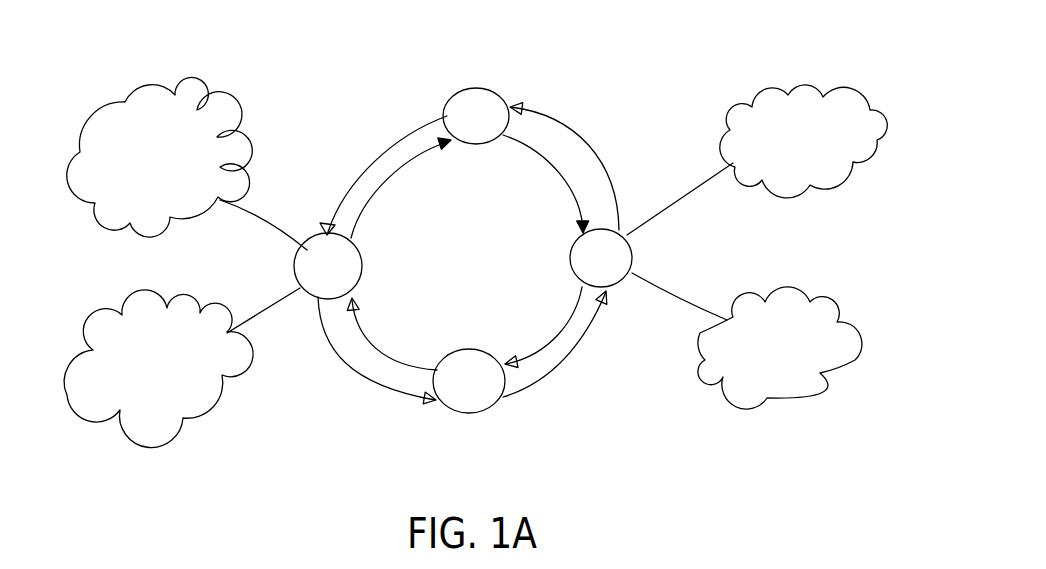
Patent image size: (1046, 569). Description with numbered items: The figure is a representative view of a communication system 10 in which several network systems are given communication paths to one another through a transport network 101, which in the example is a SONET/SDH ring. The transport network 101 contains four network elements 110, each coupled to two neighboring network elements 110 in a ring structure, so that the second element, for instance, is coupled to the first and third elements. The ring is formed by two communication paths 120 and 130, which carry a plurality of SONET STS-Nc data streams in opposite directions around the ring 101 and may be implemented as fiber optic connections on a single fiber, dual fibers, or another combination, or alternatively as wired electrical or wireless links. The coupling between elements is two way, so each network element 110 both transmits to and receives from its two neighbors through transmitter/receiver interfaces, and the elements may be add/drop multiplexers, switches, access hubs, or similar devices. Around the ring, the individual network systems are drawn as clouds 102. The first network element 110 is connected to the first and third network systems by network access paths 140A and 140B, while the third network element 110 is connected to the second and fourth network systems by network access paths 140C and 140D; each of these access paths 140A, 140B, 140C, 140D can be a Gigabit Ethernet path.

The communication system 10 is at (592, 78).
The transport network 101 is at (488, 269).
The network 102 is at (146, 84).
The network element 110 is at (294, 265).
The communication path 120 is at (380, 152).
The communication path 130 is at (385, 182).
The network access path 140A is at (270, 220).
The network access path 140B is at (270, 310).
The network access path 140C is at (667, 202).
The network access path 140D is at (693, 307).